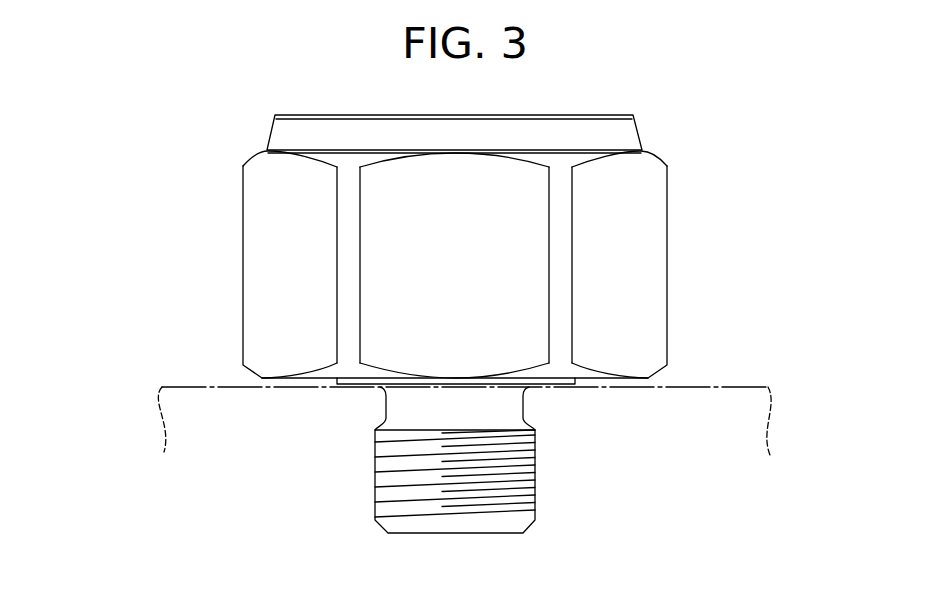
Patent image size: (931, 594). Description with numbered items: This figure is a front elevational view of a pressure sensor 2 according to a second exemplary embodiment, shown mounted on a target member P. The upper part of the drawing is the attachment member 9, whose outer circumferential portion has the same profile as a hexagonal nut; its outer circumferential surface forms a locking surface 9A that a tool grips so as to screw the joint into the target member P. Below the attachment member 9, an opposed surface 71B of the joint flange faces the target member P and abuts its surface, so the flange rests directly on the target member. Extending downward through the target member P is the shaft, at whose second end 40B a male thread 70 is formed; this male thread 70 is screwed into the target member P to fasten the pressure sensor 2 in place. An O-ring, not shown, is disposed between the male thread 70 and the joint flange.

The pressure sensor 2 is at (702, 107).
The attachment member 9 is at (210, 182).
The locking surface 9A is at (258, 265).
The opposed surface 71B is at (352, 388).
The male thread 70 is at (380, 480).
The second end 40B is at (528, 473).
The target member P is at (732, 385).